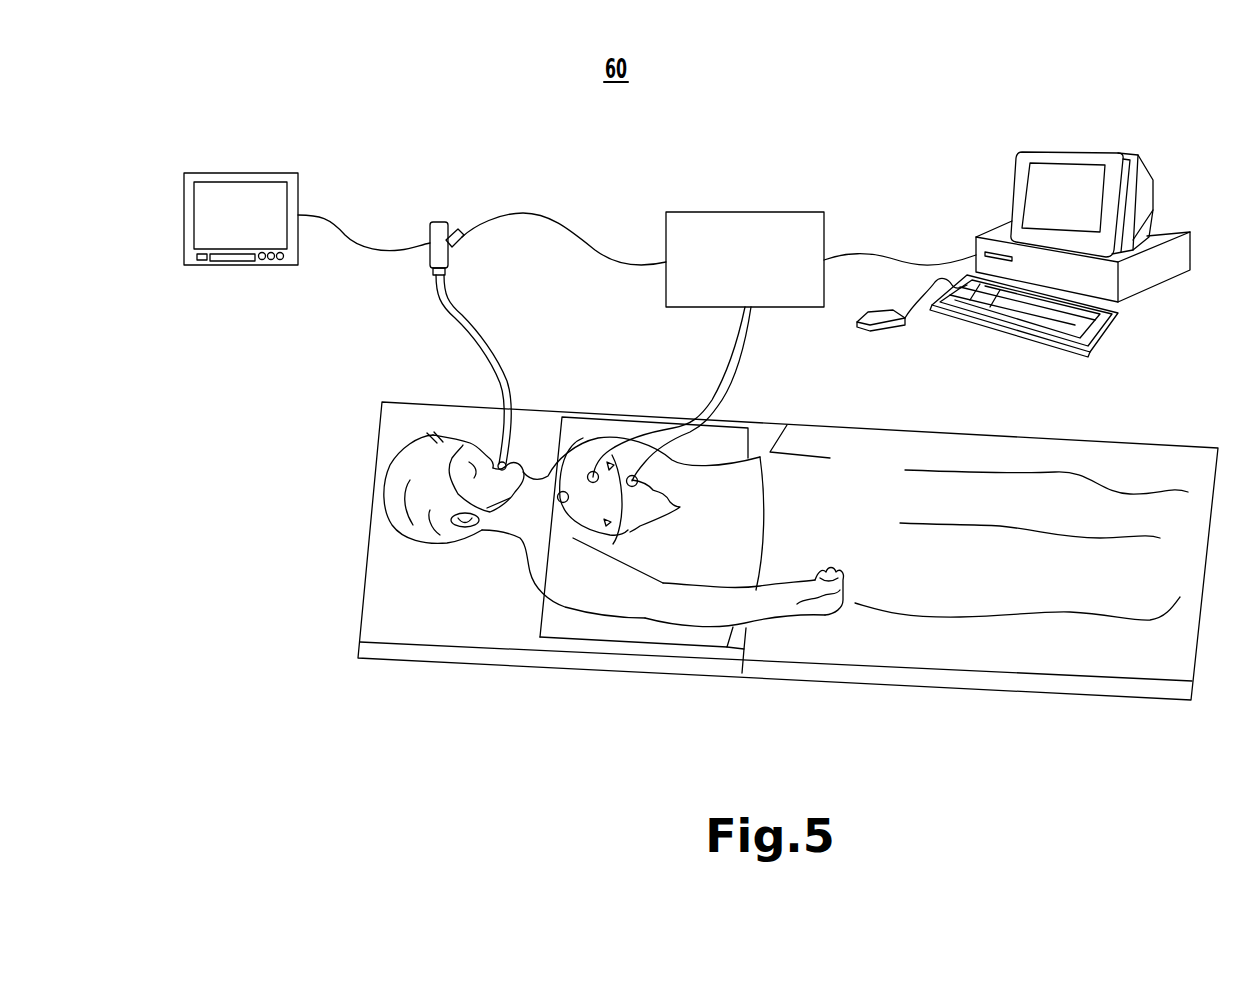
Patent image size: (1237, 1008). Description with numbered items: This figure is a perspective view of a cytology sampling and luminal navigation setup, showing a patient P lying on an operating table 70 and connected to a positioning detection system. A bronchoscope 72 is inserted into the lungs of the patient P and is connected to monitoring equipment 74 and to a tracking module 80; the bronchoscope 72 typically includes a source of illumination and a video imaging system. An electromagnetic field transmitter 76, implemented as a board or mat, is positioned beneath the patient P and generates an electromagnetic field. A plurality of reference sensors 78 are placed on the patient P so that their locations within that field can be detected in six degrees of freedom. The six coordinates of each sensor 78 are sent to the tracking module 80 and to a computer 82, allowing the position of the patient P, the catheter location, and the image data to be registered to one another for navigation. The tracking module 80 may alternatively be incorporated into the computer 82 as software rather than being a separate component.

The operating table 70 is at (402, 602).
The bronchoscope 72 is at (478, 337).
The monitoring equipment 74 is at (255, 172).
The electromagnetic field transmitter 76 is at (578, 613).
The reference sensors 78 is at (640, 523).
The tracking module 80 is at (767, 212).
The computer 82 is at (1068, 152).
The patient P is at (415, 455).